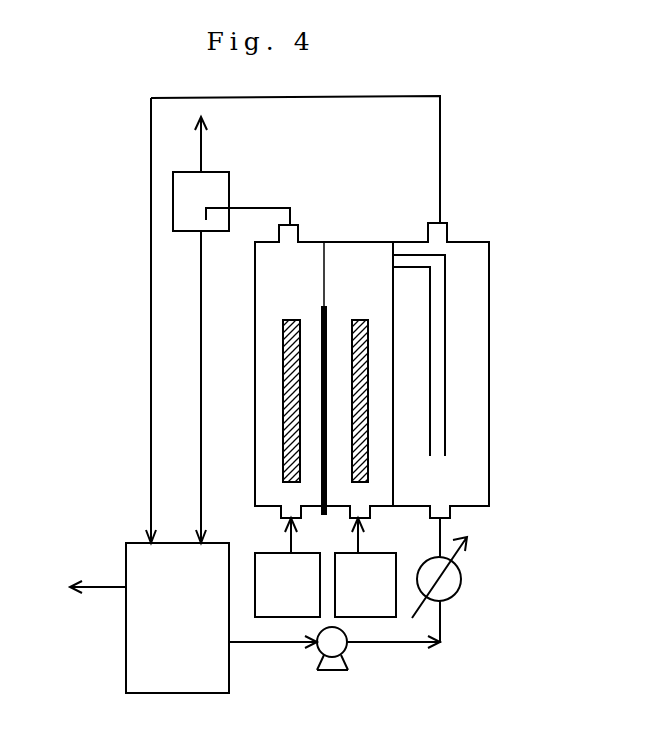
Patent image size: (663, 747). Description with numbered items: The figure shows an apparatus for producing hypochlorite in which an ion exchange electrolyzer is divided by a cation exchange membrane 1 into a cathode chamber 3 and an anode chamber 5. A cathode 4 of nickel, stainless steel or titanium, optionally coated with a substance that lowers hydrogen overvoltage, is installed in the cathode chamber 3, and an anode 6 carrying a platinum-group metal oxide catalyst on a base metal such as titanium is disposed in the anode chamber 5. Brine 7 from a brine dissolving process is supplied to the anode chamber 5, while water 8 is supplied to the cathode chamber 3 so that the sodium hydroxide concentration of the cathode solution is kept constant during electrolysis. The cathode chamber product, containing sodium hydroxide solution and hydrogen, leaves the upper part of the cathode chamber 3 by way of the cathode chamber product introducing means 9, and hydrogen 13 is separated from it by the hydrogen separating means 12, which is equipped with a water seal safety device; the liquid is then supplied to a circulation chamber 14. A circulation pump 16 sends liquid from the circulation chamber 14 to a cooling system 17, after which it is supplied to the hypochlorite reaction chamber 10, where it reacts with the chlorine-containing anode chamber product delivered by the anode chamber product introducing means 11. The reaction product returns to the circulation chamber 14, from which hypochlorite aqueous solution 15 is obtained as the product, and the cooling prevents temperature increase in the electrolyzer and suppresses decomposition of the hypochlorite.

The cation exchange membrane 1 is at (317, 490).
The cathode chamber 3 is at (283, 298).
The cathode 4 is at (290, 443).
The anode chamber 5 is at (380, 483).
The anode 6 is at (357, 482).
The brine 7 is at (365, 567).
The water 8 is at (287, 567).
The cathode chamber product introducing means 9 is at (373, 287).
The hypochlorite reaction chamber 10 is at (478, 363).
The anode chamber product introducing means 11 is at (442, 295).
The hydrogen separating means 12 is at (185, 204).
The hydrogen 13 is at (210, 152).
The circulation chamber 14 is at (177, 618).
The hypochlorite aqueous solution 15 is at (79, 587).
The circulation pump 16 is at (330, 665).
The cooling system 17 is at (457, 568).